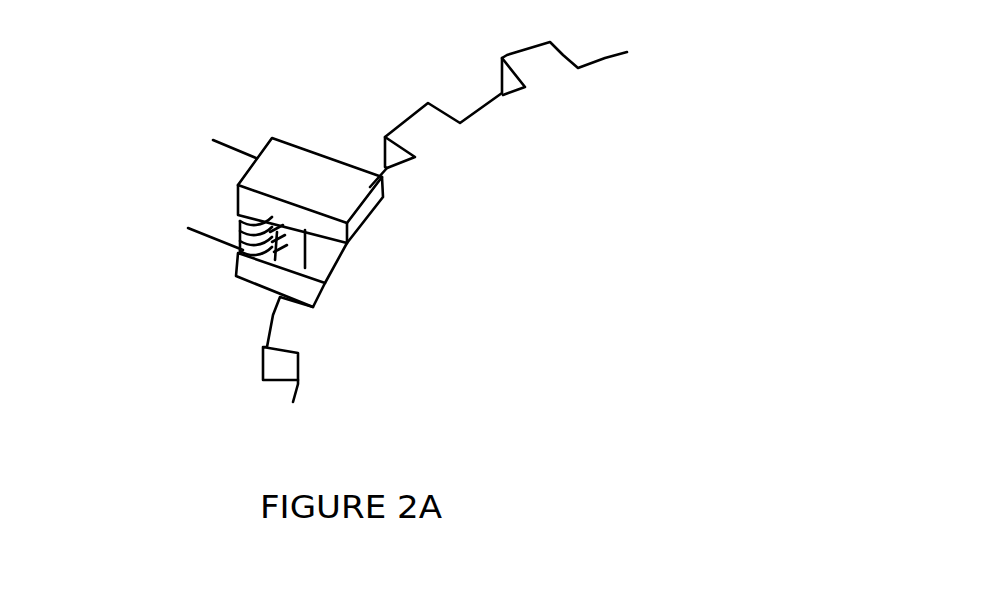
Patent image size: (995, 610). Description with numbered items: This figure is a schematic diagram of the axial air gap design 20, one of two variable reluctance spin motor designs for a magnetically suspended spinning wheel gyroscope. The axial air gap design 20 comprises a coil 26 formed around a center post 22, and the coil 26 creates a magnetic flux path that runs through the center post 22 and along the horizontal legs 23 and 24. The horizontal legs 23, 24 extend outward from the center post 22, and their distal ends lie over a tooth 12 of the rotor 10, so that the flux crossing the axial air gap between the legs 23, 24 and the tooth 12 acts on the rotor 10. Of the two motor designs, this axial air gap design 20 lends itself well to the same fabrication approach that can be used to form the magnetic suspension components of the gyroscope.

The rotor 10 is at (423, 240).
The tooth 12 is at (318, 257).
The axial air gap design 20 is at (298, 130).
The center post 22 is at (240, 208).
The horizontal leg 23 is at (333, 183).
The horizontal leg 24 is at (247, 272).
The coil 26 is at (230, 216).